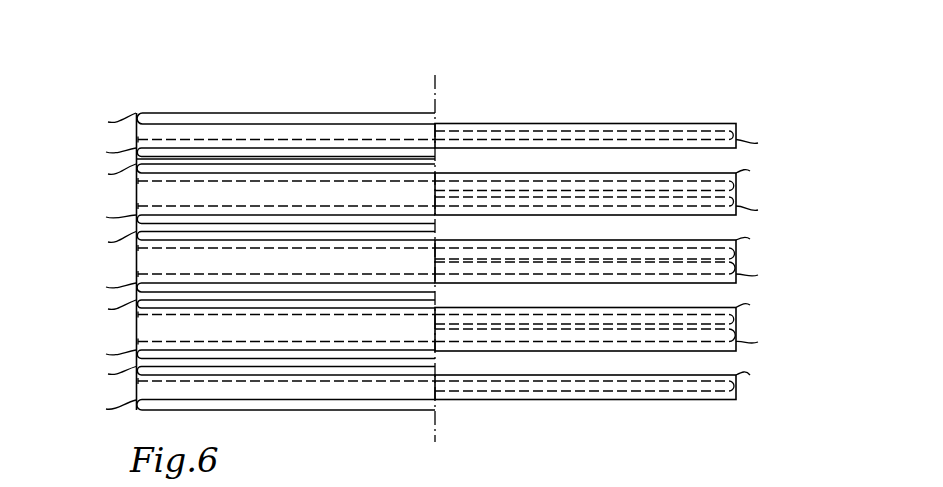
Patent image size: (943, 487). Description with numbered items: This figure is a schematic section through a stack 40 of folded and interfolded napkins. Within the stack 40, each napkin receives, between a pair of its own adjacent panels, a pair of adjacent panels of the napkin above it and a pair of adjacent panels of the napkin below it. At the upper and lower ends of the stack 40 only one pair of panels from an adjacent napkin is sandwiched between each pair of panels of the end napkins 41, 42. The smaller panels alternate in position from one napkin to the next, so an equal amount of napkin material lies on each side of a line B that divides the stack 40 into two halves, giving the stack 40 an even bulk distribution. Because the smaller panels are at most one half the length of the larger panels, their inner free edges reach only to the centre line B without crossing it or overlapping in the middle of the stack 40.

The stack 40 is at (624, 86).
The end napkin 41 is at (493, 123).
The end napkin 42 is at (492, 402).
The line B is at (435, 78).